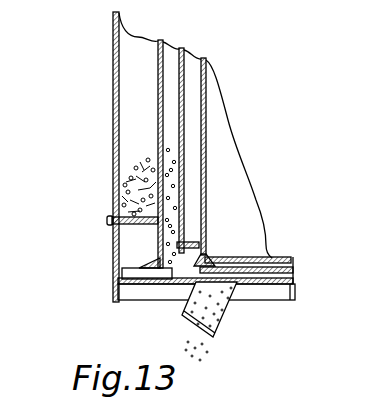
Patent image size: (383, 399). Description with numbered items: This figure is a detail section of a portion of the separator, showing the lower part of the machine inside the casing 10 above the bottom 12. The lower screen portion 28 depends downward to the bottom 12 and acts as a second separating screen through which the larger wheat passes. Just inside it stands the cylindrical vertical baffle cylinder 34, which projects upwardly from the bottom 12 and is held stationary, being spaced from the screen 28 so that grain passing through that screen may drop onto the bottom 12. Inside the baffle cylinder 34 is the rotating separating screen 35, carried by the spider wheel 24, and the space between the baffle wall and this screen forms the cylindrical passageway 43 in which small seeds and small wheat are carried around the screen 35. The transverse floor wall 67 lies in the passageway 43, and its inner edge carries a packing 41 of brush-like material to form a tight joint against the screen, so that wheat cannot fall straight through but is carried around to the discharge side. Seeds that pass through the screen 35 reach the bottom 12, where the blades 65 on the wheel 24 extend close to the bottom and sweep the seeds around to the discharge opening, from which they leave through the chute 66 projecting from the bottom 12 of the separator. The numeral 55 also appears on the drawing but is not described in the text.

The casing 10 is at (113, 129).
The lower screen portion 28 is at (158, 89).
The baffle cylinder 34 is at (184, 120).
The separating screen 35 is at (202, 199).
The passageway 43 is at (187, 183).
The packing 41 is at (204, 245).
The transverse floor wall 67 is at (190, 243).
The spider wheel 24 is at (284, 261).
The blades 65 is at (267, 280).
The bottom 12 is at (294, 300).
The chute 66 is at (186, 325).
The sheet marker 55 is at (354, 387).